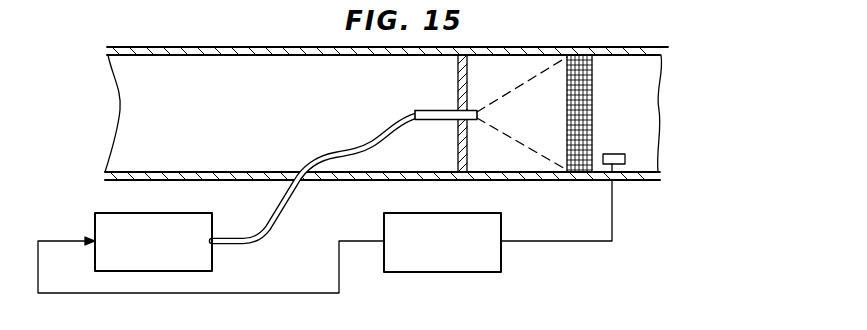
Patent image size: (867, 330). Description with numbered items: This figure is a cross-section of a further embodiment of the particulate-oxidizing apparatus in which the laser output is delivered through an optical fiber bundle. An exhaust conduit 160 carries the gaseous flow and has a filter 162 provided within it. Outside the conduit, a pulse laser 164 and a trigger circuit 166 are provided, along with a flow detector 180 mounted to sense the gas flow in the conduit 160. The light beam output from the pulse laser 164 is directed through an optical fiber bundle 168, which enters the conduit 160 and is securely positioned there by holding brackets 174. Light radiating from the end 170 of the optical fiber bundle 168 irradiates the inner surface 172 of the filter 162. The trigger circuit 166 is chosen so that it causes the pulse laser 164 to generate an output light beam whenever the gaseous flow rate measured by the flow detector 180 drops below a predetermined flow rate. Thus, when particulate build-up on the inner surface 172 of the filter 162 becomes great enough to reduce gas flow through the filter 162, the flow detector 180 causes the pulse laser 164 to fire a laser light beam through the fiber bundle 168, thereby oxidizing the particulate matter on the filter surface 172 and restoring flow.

The exhaust conduit 160 is at (273, 47).
The filter 162 is at (594, 73).
The pulse laser 164 is at (95, 218).
The trigger circuit 166 is at (452, 272).
The optical fiber bundle 168 is at (333, 155).
The end of optical fiber bundle 170 is at (479, 115).
The inner surface of filter 172 is at (566, 170).
The holding brackets 174 is at (458, 82).
The flow detector 180 is at (625, 160).